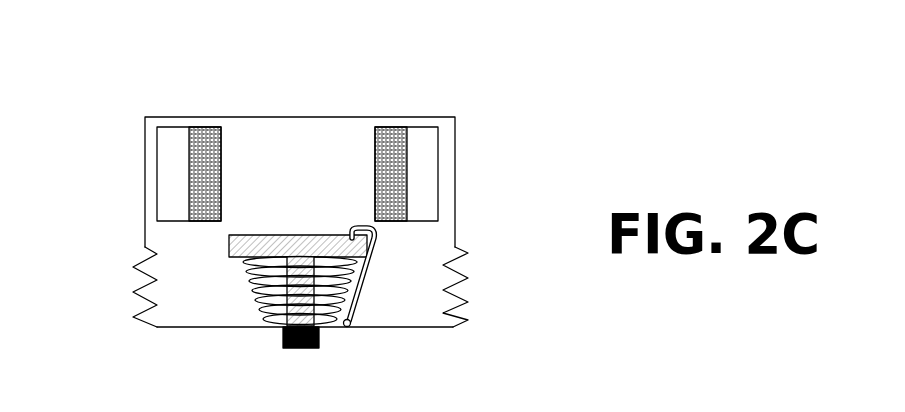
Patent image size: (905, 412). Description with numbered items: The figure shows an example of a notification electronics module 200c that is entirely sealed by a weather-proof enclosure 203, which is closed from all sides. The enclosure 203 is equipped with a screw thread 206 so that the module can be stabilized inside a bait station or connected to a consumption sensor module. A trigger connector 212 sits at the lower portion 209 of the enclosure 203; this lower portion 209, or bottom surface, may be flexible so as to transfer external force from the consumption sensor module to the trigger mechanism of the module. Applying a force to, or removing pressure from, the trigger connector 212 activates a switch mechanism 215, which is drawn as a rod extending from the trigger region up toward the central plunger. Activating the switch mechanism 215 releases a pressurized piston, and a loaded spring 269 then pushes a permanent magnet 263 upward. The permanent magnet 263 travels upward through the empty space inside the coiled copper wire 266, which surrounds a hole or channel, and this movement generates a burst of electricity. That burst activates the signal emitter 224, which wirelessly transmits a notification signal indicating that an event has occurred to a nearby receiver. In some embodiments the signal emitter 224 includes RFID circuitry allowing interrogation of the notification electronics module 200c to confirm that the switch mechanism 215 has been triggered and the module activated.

The notification electronics module 200c is at (273, 98).
The enclosure 203 is at (215, 117).
The signal emitter 224 is at (423, 127).
The coiled copper wire 266 is at (375, 198).
The permanent magnet 263 is at (229, 245).
The switch mechanism 215 is at (377, 242).
The screw thread 206 is at (133, 317).
The loaded spring 269 is at (255, 288).
The trigger connector 212 is at (303, 348).
The lower portion 209 is at (390, 338).